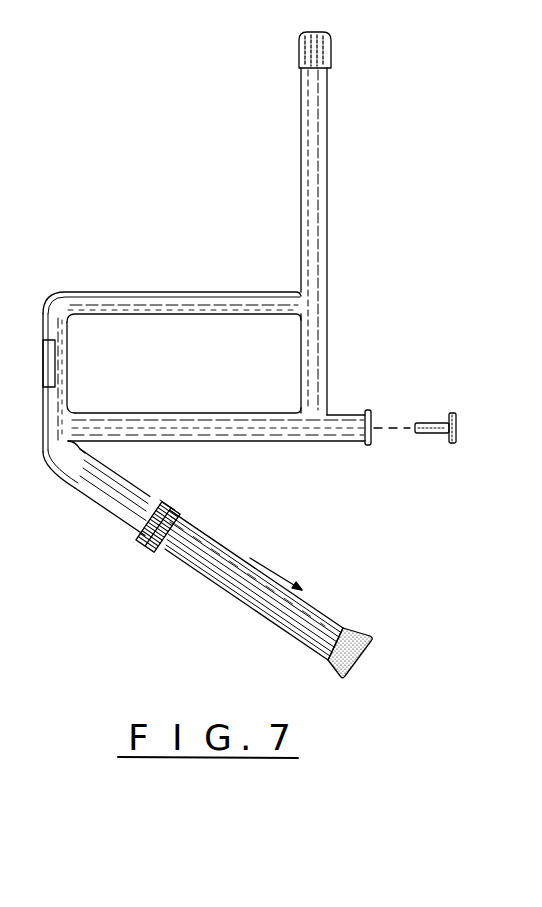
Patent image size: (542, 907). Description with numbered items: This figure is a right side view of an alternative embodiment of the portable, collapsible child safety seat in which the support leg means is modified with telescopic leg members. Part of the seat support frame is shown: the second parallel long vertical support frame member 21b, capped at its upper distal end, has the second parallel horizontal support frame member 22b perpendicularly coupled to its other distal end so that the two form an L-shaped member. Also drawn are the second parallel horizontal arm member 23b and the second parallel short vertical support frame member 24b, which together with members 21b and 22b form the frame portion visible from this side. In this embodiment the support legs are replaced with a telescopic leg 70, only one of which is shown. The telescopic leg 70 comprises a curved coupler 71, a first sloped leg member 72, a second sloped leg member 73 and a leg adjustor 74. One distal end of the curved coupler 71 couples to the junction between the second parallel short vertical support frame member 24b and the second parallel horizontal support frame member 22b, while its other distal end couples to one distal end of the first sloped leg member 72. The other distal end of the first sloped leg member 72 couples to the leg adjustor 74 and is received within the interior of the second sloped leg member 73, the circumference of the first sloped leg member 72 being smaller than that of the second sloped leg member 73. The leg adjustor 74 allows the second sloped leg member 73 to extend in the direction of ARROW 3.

The second parallel long vertical support frame member 21b is at (325, 92).
The second parallel horizontal support frame member 22b is at (200, 413).
The second parallel horizontal arm member 23b is at (190, 292).
The second parallel short vertical support frame member 24b is at (45, 326).
The telescopic leg 70 is at (243, 601).
The curved coupler 71 is at (48, 463).
The first sloped leg member 72 is at (120, 523).
The second sloped leg member 73 is at (318, 617).
The leg adjustor 74 is at (175, 517).
The ARROW 3 is at (270, 574).